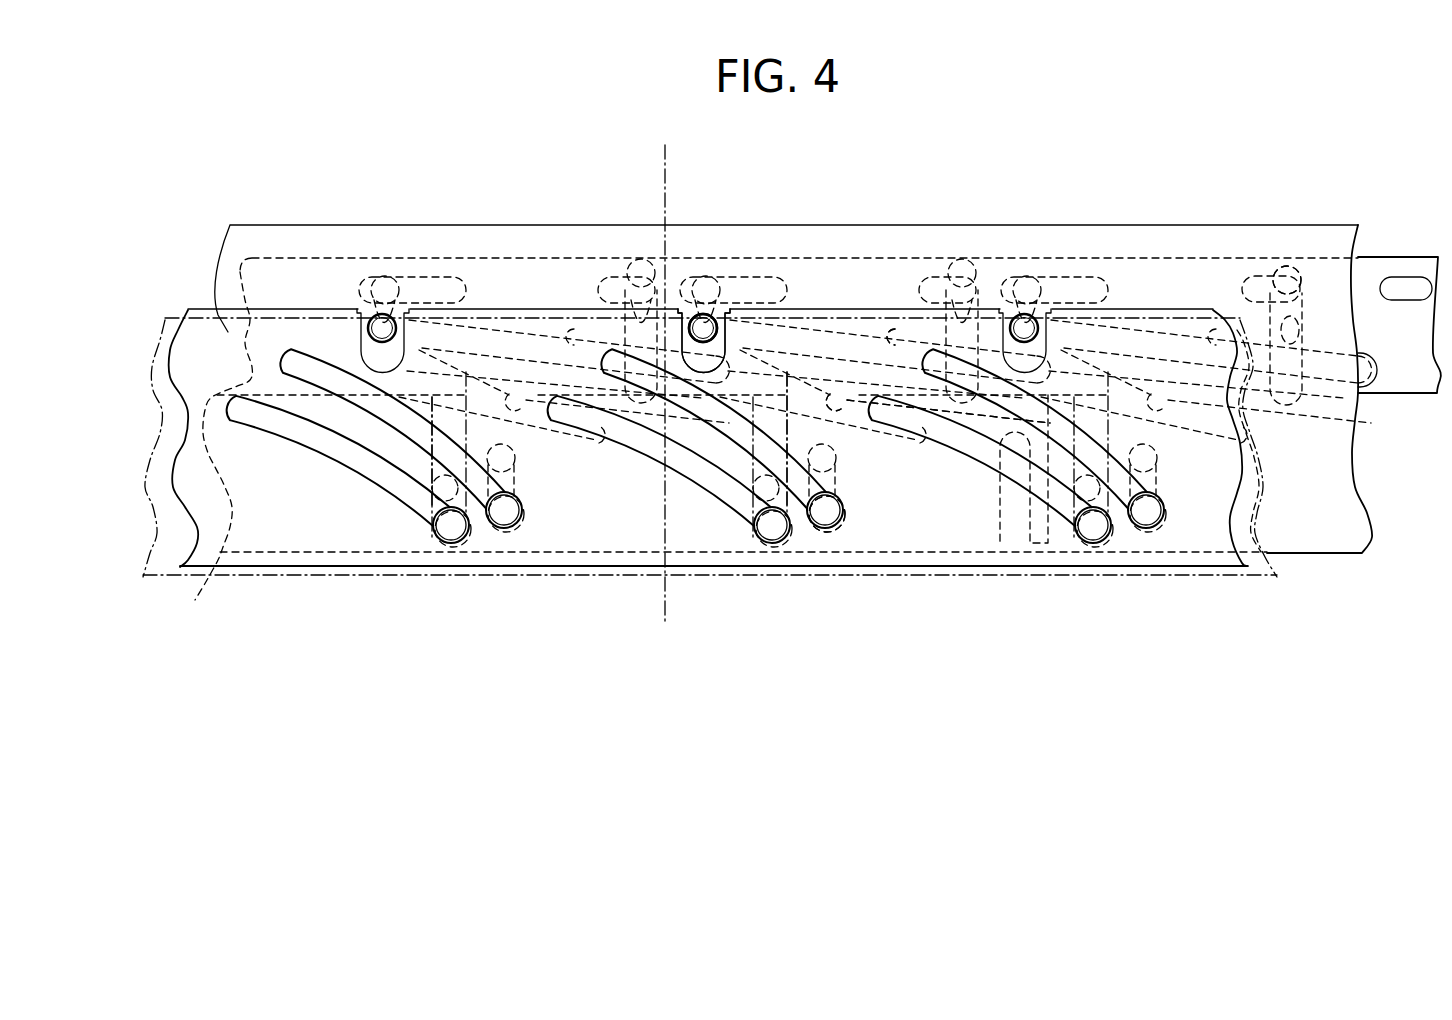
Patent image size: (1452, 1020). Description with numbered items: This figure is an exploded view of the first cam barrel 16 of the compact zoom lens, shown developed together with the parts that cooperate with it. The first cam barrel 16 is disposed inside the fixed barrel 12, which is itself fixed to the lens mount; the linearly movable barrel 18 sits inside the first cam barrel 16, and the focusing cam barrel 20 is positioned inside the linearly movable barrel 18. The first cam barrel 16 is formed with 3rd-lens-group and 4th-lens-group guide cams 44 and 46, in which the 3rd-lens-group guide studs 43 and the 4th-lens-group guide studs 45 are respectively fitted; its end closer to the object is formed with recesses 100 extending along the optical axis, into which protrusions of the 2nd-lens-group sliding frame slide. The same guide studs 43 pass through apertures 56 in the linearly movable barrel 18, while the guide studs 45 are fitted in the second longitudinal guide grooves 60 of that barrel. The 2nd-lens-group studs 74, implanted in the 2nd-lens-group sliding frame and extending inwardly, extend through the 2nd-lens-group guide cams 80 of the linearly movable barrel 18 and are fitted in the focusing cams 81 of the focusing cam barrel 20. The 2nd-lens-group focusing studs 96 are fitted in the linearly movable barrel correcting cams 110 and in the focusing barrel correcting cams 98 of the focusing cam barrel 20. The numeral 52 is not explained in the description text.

The fixed barrel 12 is at (163, 557).
The first cam barrel 16 is at (215, 530).
The linearly movable barrel 18 is at (1325, 522).
The focusing cam barrel 20 is at (1328, 392).
The 3rd-lens-group guide studs 43 is at (777, 544).
The 3rd-lens-group guide cams 44 is at (745, 430).
The 4th-lens-group guide studs 45 is at (832, 529).
The 4th-lens-group guide cams 46 is at (783, 397).
The pin 52 is at (432, 505).
The apertures 56 is at (790, 505).
The second longitudinal guide grooves 60 is at (837, 523).
The 2nd-lens-group studs 74 is at (703, 337).
The 2nd-lens-group guide cams 80 is at (833, 393).
The focusing cams 81 is at (887, 335).
The 2nd-lens-group focusing studs 96 is at (1285, 272).
The focusing barrel correcting cams 98 is at (1382, 280).
The recesses 100 is at (738, 310).
The linearly movable barrel correcting cams 110 is at (1293, 330).